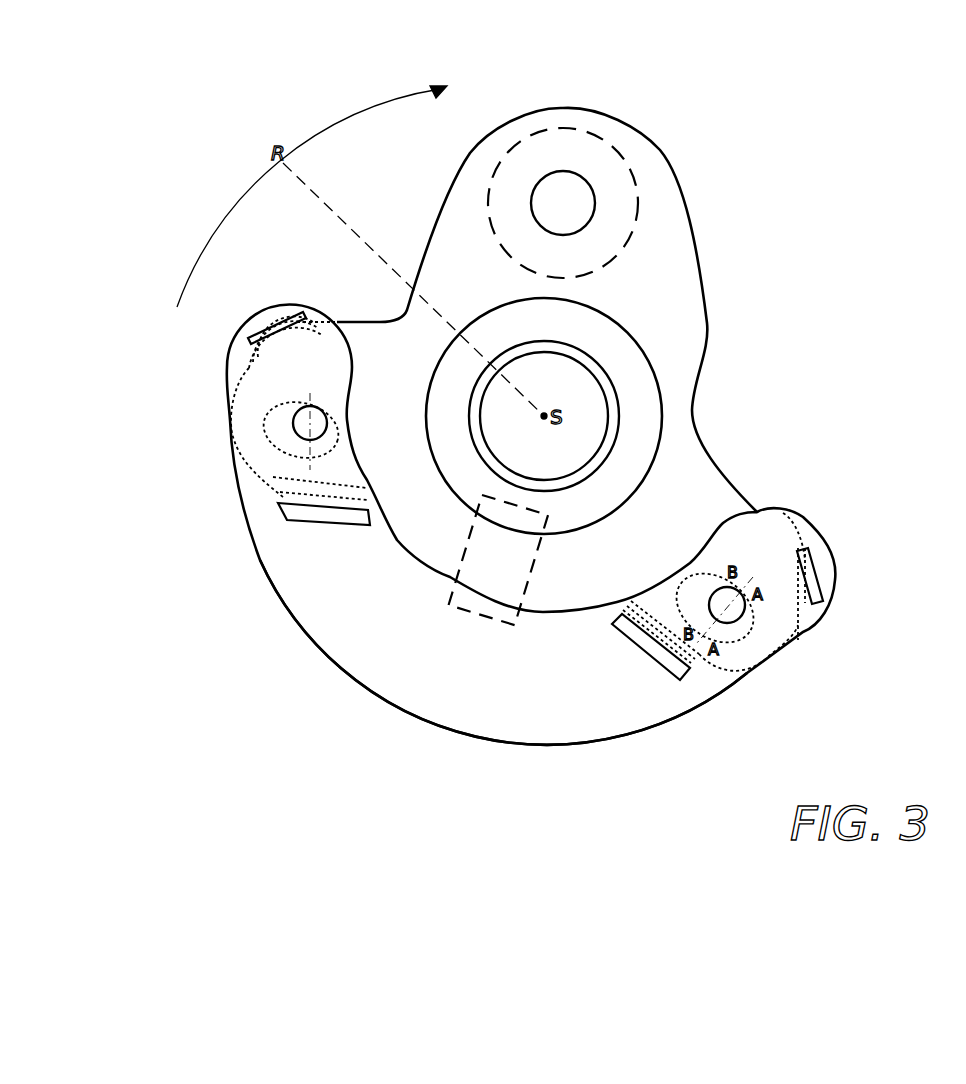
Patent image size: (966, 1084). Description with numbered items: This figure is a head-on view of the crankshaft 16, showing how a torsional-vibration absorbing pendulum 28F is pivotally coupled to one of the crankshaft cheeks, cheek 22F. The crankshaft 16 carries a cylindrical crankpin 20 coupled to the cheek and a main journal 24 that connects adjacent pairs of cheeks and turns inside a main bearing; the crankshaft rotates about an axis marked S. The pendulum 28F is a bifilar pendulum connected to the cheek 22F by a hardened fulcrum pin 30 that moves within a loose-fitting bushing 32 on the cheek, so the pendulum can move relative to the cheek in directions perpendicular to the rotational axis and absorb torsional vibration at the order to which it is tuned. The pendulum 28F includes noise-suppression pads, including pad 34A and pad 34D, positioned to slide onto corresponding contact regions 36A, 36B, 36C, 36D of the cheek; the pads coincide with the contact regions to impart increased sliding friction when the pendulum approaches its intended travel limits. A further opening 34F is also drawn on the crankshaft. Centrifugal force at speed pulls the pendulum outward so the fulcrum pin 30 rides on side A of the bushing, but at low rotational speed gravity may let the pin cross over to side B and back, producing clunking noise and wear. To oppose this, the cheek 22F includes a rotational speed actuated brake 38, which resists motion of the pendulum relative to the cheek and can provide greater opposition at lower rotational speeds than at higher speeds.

The crankshaft 16 is at (898, 302).
The crankpin 20 is at (620, 252).
The cheek 22F is at (485, 283).
The main journal 24 is at (465, 415).
The pendulum 28F is at (595, 698).
The fulcrum pin 30 is at (323, 428).
The bushing 32 is at (270, 435).
The noise-suppression pad 34A is at (270, 322).
The noise-suppression pad 34D is at (811, 550).
The top opening 34F is at (540, 181).
The contact region 36A is at (298, 337).
The contact region 36B is at (293, 510).
The contact region 36C is at (683, 675).
The contact region 36D is at (277, 483).
The rotational speed actuated brake 38 is at (510, 568).